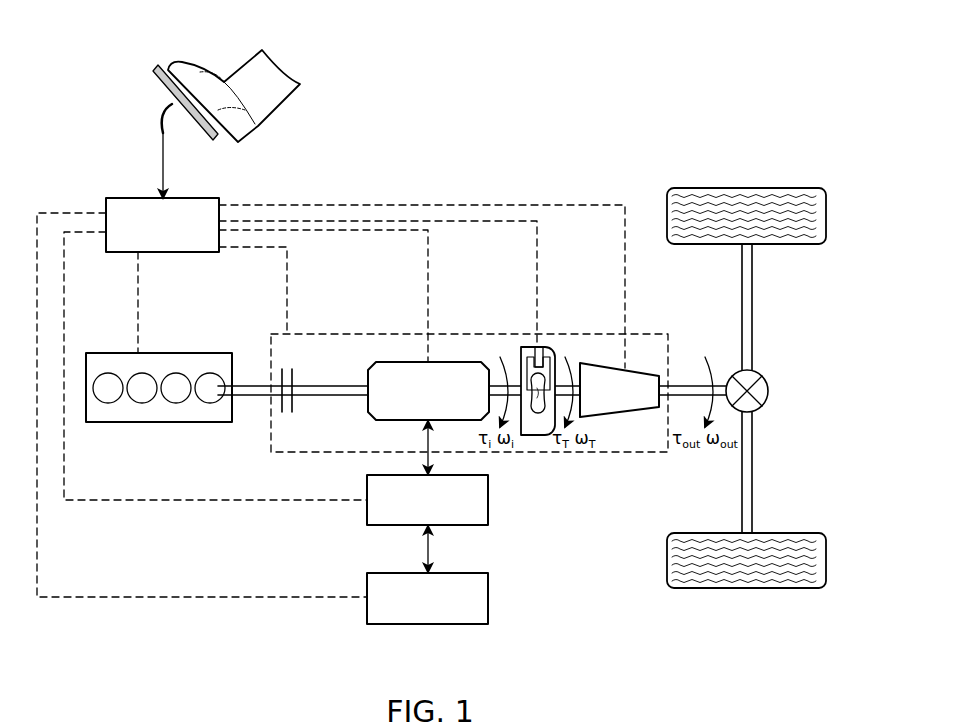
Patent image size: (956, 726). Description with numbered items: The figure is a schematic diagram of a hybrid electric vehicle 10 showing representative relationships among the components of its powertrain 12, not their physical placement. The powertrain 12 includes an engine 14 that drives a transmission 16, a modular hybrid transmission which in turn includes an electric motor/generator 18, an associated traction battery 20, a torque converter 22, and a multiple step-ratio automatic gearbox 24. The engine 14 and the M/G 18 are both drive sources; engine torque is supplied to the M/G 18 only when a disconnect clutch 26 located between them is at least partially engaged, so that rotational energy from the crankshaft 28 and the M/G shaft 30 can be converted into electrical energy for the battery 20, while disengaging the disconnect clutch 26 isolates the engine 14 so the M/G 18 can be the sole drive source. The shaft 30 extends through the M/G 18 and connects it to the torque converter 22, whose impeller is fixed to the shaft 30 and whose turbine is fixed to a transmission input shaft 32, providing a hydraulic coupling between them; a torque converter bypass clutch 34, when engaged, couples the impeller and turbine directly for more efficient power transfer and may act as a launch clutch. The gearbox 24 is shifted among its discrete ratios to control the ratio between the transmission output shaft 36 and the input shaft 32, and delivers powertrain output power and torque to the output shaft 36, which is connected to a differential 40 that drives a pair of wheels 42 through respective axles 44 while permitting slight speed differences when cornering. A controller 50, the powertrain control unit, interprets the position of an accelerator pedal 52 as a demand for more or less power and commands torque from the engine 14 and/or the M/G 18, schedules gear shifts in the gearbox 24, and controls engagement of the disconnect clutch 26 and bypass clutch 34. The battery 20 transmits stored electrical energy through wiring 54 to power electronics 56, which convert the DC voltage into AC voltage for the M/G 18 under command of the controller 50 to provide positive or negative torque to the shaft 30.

The hybrid electric vehicle 10 is at (572, 118).
The powertrain 12 is at (214, 522).
The engine 14 is at (122, 353).
The transmission 16 is at (505, 332).
The electric motor/generator 18 is at (408, 362).
The traction battery 20 is at (489, 600).
The torque converter 22 is at (537, 436).
The gearbox 24 is at (610, 411).
The disconnect clutch 26 is at (292, 380).
The crankshaft 28 is at (260, 386).
The M/G shaft 30 is at (345, 385).
The transmission input shaft 32 is at (580, 366).
The torque converter bypass clutch 34 is at (540, 347).
The transmission output shaft 36 is at (681, 384).
The differential 40 is at (769, 392).
The wheels 42 is at (748, 188).
The axles 44 is at (753, 308).
The controller 50 is at (130, 198).
The accelerator pedal 52 is at (160, 98).
The wiring 54 is at (429, 548).
The power electronics 56 is at (489, 500).